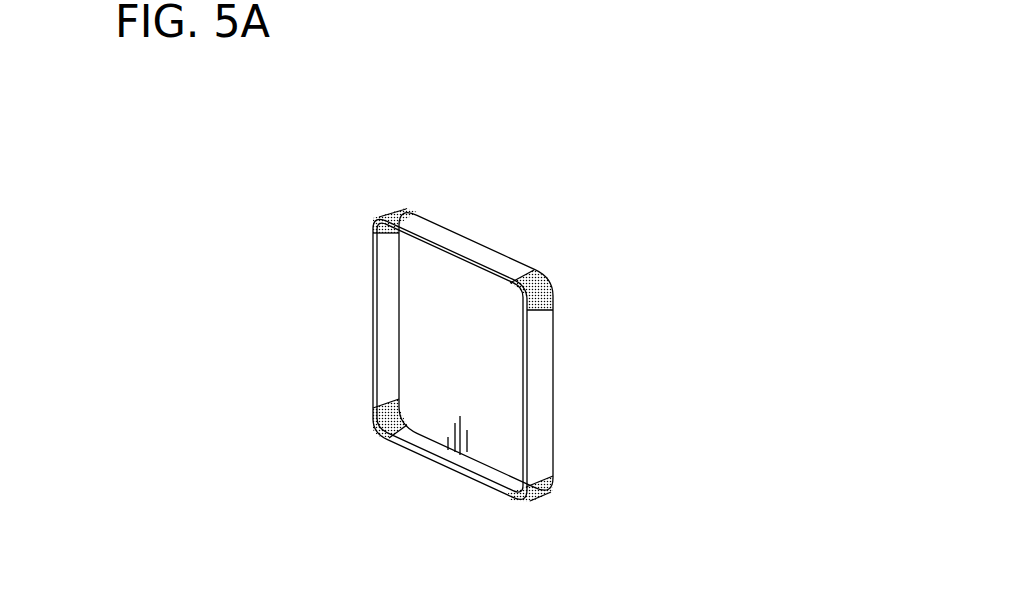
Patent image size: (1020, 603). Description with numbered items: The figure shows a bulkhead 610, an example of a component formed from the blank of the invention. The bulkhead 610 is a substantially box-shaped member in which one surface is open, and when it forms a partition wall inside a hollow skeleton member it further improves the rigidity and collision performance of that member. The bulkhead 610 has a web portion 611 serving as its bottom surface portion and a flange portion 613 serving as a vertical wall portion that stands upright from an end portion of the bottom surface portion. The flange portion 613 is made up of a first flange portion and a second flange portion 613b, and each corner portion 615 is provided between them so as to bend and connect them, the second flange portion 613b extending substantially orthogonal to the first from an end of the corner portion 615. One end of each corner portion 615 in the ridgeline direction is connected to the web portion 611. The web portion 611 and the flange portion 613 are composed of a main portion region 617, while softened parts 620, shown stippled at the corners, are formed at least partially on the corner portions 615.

The bulkhead 610 is at (481, 348).
The web portion 611 is at (422, 275).
The flange portion 613 is at (554, 388).
The second flange portion 613b is at (490, 260).
The corner portion 615 is at (368, 227).
The main portion region 617 is at (450, 474).
The softened part 620 is at (400, 206).